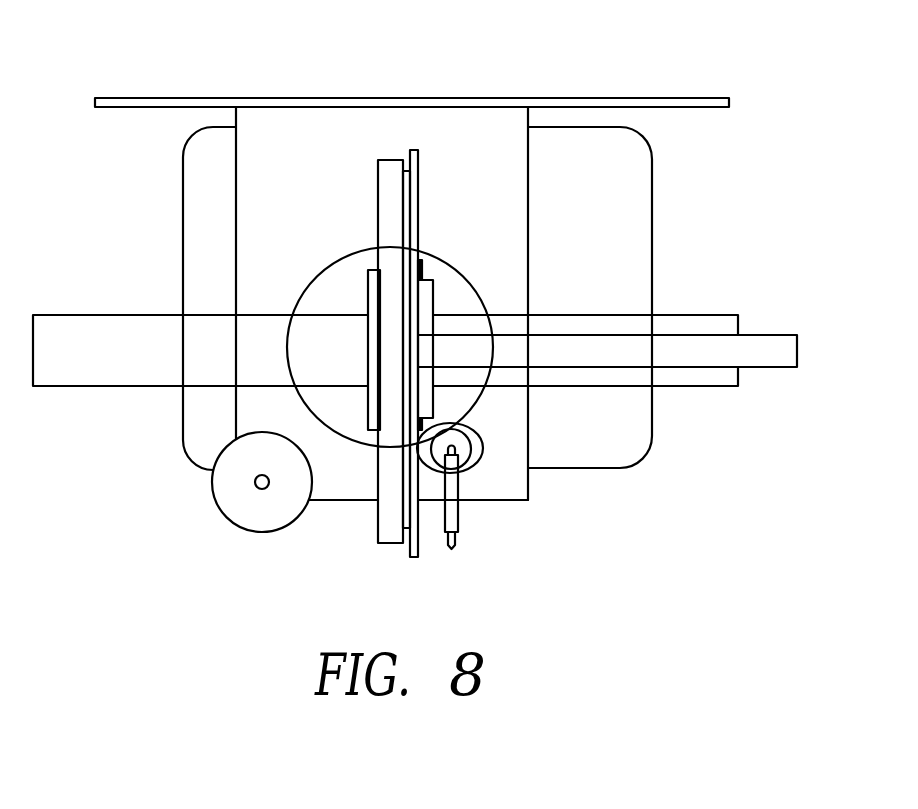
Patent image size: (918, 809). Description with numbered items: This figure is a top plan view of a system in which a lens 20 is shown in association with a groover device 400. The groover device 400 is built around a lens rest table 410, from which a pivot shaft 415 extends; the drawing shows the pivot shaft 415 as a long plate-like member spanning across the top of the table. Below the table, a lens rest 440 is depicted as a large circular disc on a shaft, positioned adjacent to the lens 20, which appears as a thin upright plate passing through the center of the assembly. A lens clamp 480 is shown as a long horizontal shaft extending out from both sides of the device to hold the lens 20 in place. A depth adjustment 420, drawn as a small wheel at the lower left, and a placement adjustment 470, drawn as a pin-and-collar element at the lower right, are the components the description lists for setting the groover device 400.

The groover device 400 is at (787, 254).
The pivot shaft 415 is at (208, 98).
The lens rest table 410 is at (285, 193).
The lens clamp 480 is at (118, 386).
The lens rest 440 is at (450, 264).
The lens 20 is at (391, 530).
The depth adjustment 420 is at (216, 504).
The placement adjustment 470 is at (483, 450).